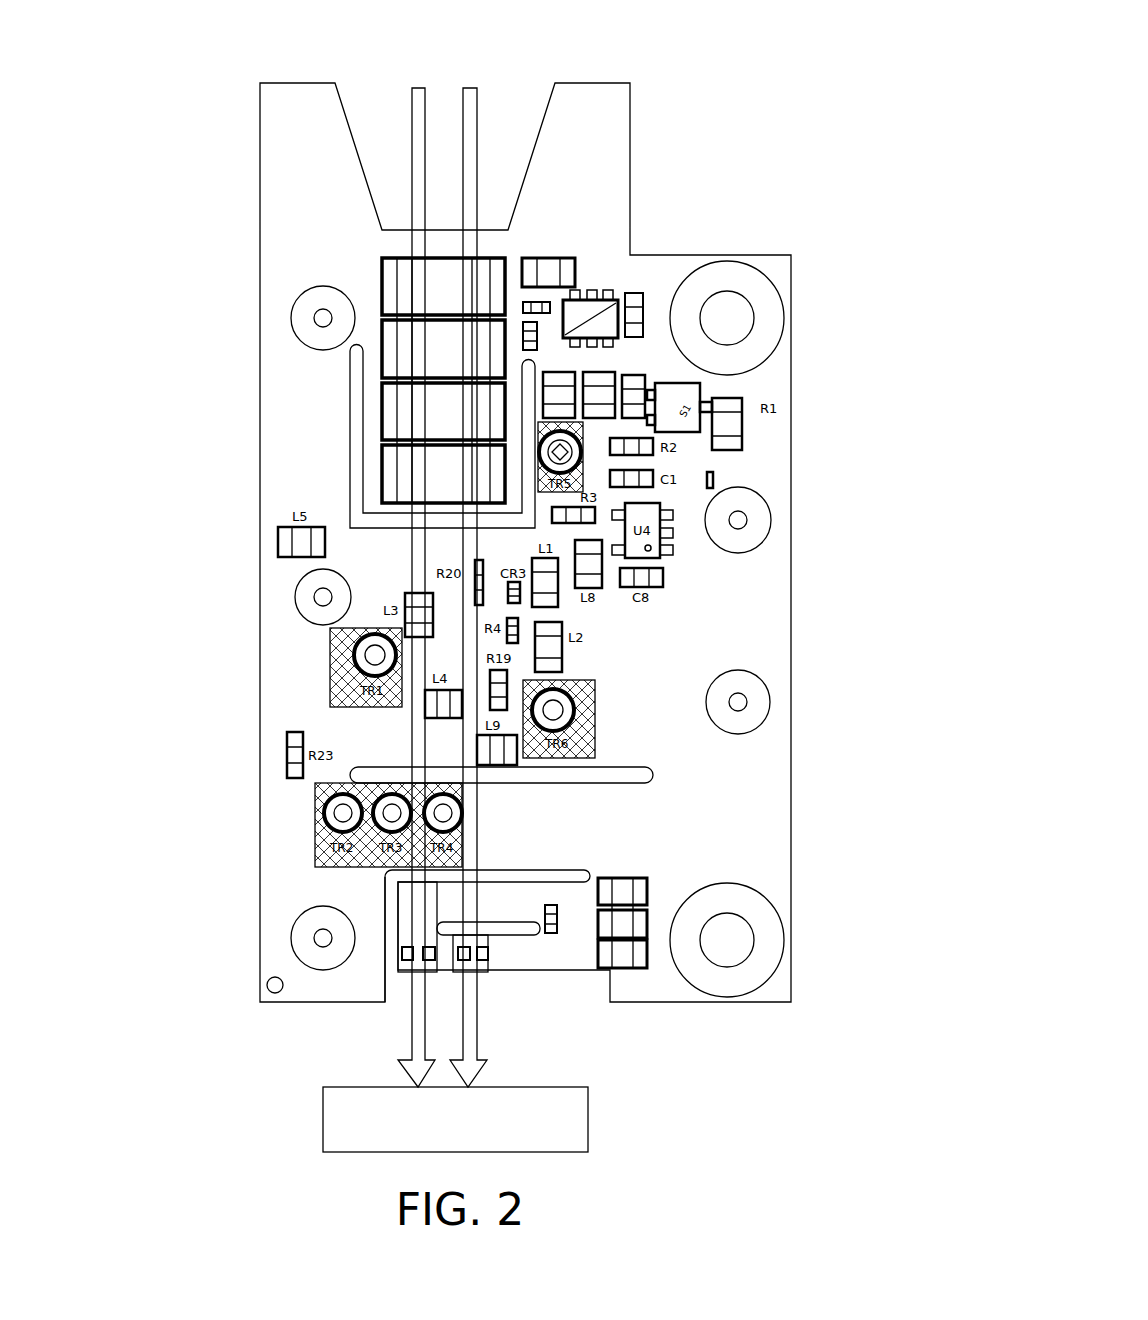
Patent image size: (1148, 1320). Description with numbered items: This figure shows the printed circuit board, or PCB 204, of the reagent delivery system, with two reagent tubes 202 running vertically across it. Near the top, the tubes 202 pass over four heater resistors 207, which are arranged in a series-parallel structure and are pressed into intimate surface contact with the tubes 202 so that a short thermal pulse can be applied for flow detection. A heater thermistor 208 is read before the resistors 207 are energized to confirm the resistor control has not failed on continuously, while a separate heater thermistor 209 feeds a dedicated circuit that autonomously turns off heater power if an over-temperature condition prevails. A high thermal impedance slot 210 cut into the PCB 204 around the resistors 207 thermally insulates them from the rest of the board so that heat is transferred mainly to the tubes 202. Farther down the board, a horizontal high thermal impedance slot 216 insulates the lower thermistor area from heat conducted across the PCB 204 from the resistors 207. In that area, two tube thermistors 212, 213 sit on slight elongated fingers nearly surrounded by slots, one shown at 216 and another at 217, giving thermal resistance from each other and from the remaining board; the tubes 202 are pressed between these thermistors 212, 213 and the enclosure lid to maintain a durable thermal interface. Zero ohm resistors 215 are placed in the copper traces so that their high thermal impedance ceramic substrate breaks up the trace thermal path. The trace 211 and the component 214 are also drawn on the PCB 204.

The tubes 202 is at (470, 88).
The PCB 204 is at (237, 88).
The heater resistor 207 is at (385, 318).
The heater thermistor 208 is at (548, 305).
The heater thermistor 209 is at (538, 333).
The high thermal impedance slot 210 is at (357, 458).
The horizontal trace 211 is at (623, 773).
The thermistor 212 is at (485, 965).
The thermistor 213 is at (397, 945).
The resistor R26 214 is at (558, 897).
The resistors 215 is at (647, 917).
The high thermal impedance slot 216 is at (532, 938).
The slot 217 is at (393, 968).